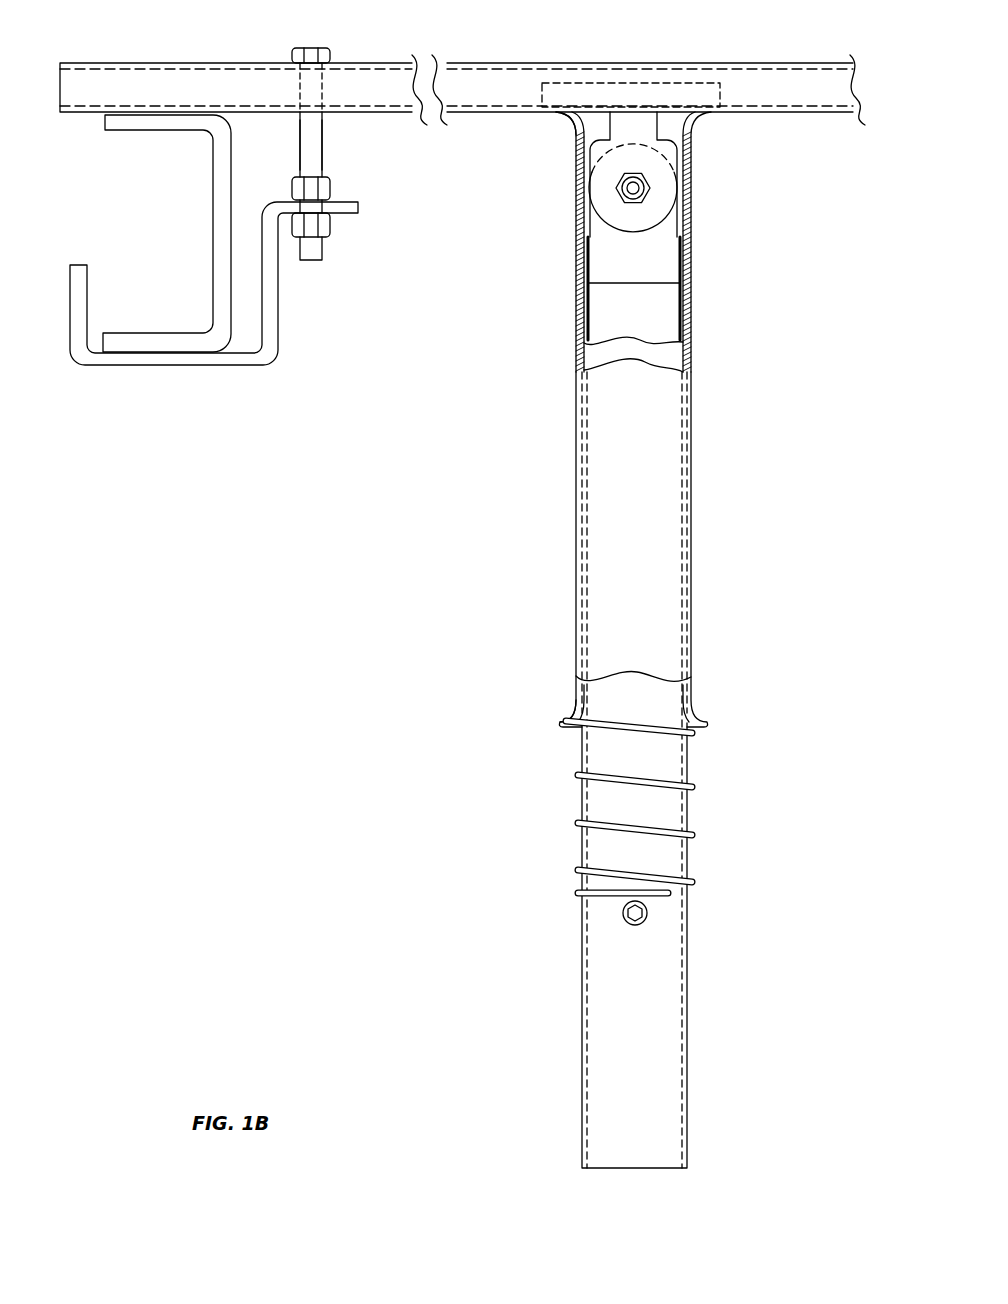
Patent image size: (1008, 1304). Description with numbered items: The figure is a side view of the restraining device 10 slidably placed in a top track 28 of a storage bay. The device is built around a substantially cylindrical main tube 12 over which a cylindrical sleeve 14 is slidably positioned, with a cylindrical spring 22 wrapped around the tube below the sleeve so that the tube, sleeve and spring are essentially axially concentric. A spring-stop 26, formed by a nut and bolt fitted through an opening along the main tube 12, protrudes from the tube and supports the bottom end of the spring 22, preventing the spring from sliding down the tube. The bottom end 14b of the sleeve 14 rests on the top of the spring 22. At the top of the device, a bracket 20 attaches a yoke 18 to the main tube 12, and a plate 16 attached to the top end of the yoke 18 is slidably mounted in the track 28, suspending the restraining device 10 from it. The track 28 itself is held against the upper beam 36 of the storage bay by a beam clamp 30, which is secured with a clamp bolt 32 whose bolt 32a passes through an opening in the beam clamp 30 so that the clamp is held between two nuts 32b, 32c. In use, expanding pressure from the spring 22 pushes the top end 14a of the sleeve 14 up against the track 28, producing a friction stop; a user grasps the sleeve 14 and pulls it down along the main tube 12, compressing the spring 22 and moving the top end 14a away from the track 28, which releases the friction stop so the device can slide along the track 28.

The restraining device 10 is at (760, 980).
The main tube 12 is at (663, 352).
The sleeve 14 is at (574, 568).
The top end of the sleeve 14a is at (566, 118).
The bottom end of the sleeve 14b is at (573, 711).
The plate 16 is at (577, 78).
The yoke 18 is at (670, 124).
The bracket 20 is at (682, 277).
The spring 22 is at (700, 790).
The spring-stop 26 is at (617, 919).
The top track 28 is at (208, 68).
The beam clamp 30 is at (231, 372).
The clamp bolt 32 is at (326, 260).
The bolt 32a is at (300, 159).
The nut 32b is at (332, 190).
The nut 32c is at (330, 229).
The upper beam 36 is at (215, 249).